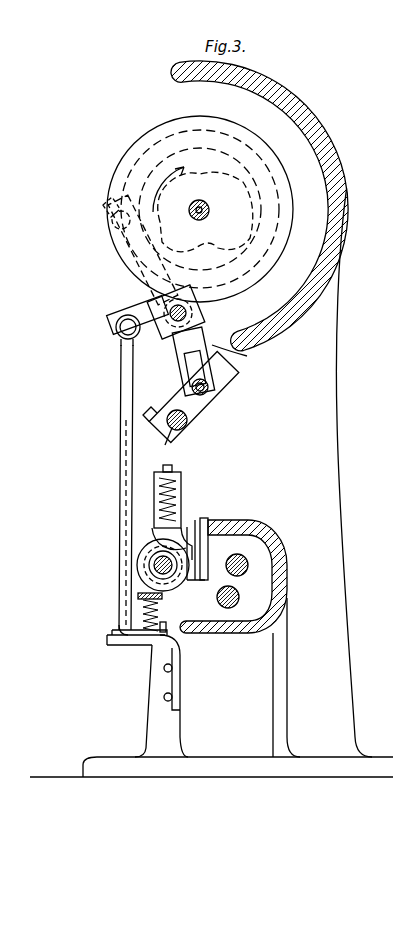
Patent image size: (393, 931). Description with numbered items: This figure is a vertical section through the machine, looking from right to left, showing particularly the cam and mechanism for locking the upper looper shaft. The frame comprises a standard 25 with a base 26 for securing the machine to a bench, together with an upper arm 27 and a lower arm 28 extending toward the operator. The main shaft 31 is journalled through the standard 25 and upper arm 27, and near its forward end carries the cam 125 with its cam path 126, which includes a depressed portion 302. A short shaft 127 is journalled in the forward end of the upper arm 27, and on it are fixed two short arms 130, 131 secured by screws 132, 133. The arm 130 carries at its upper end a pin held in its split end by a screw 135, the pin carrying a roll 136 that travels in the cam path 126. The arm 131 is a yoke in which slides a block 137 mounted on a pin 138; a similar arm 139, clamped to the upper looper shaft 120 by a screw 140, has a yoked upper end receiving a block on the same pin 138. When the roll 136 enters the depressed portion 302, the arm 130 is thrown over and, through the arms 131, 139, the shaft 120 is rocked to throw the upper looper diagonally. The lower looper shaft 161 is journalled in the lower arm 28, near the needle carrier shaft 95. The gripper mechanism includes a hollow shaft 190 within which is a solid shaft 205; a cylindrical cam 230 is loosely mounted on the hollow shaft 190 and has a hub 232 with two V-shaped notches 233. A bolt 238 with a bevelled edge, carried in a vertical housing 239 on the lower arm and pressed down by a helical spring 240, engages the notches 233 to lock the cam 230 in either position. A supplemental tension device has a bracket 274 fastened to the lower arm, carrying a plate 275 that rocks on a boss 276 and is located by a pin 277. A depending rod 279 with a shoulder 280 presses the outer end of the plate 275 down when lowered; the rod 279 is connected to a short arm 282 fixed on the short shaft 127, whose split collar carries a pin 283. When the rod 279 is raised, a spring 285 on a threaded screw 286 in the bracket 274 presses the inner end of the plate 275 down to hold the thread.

The standard 25 is at (343, 505).
The base 26 is at (375, 763).
The upper arm 27 is at (350, 188).
The lower arm 28 is at (287, 570).
The main shaft 31 is at (203, 206).
The needle carrier shaft 95 is at (247, 560).
The upper looper shaft 120 is at (184, 424).
The cam 125 is at (165, 123).
The cam path 126 is at (150, 158).
The short shaft 127 is at (190, 313).
The short arm 130 is at (142, 284).
The short arm 131 is at (247, 356).
The screw 132 is at (176, 337).
The screw 133 is at (158, 303).
The screw 135 is at (103, 211).
The roll 136 is at (112, 238).
The block 137 is at (207, 395).
The pin 138 is at (212, 386).
The arm 139 is at (205, 416).
The screw 140 is at (148, 425).
The lower looper shaft 161 is at (232, 608).
The hollow shaft 190 is at (155, 562).
The solid shaft 205 is at (158, 568).
The cylindrical cam 230 is at (150, 553).
The hub 232 is at (145, 583).
The V-shaped longitudinal notches 233 is at (190, 549).
The bolt 238 is at (160, 536).
The housing 239 is at (181, 497).
The helical spring 240 is at (174, 484).
The bracket 274 is at (181, 687).
The plate 275 is at (169, 644).
The boss 276 is at (142, 640).
The pin 277 is at (181, 638).
The rod 279 is at (124, 486).
The shoulder 280 is at (118, 633).
The short arm 282 is at (131, 359).
The pin 283 is at (118, 336).
The spring 285 is at (160, 612).
The threaded screw 286 is at (139, 597).
The depressed portion 302 is at (218, 210).